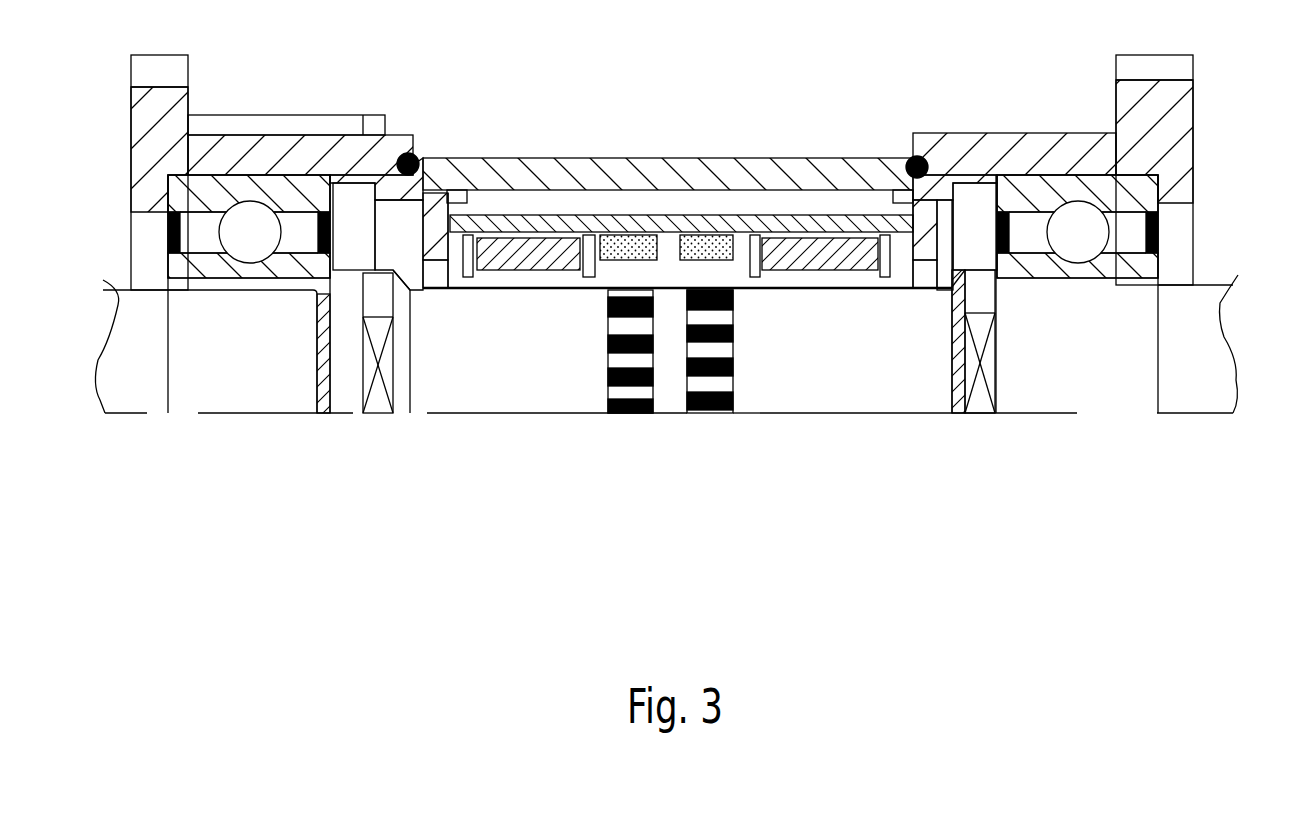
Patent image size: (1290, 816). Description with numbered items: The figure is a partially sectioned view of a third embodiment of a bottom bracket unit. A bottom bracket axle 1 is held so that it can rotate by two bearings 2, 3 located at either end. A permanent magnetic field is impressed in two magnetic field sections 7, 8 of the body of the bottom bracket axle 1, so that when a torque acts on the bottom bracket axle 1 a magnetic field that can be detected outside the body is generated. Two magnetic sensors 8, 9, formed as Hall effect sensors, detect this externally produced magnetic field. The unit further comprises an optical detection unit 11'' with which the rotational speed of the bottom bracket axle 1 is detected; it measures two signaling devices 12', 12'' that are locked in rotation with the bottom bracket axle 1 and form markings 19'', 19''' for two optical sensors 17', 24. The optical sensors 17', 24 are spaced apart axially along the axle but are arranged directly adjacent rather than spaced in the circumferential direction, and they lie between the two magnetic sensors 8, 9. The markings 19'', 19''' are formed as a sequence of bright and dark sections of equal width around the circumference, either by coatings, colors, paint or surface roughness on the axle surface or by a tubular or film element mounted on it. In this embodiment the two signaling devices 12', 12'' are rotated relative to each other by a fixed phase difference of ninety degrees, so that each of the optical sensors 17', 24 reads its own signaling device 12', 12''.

The bottom bracket axle 1 is at (513, 398).
The bearing 2 is at (1176, 232).
The bearing 3 is at (158, 238).
The magnetic field section 7 is at (542, 337).
The magnetic field section / magnetic sensor 8 is at (540, 217).
The magnetic sensor 9 is at (812, 217).
The optical detection unit 11'' is at (668, 140).
The signaling device 12' is at (621, 387).
The signaling device 12'' is at (743, 351).
The optical sensor 17' is at (628, 180).
The marking 19'' is at (690, 465).
The marking 19''' is at (759, 456).
The optical sensor 24 is at (713, 217).